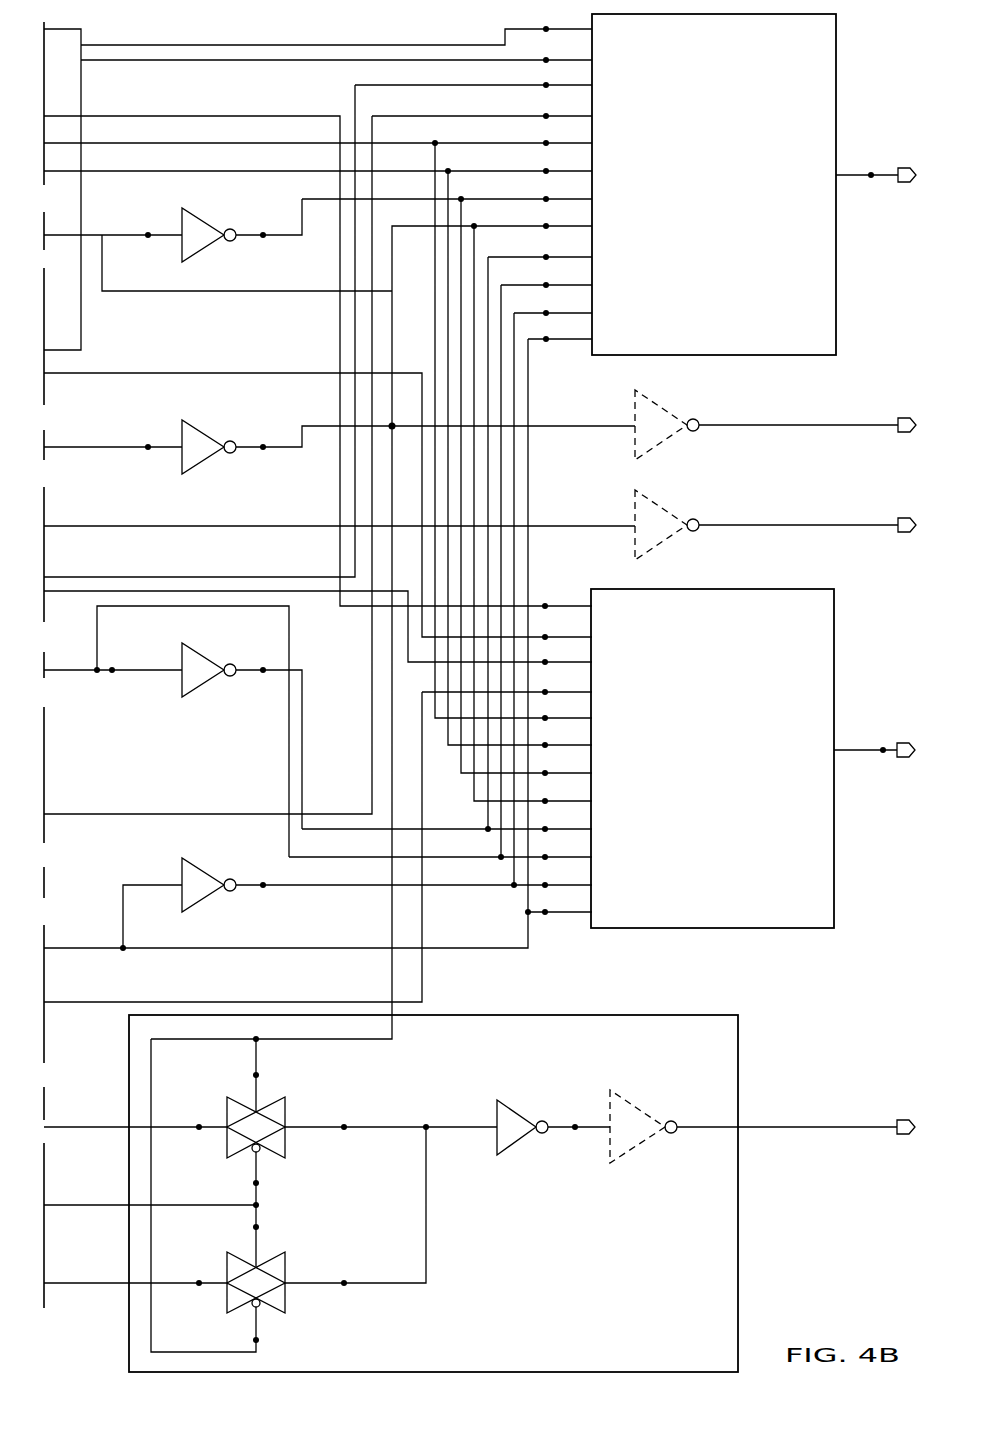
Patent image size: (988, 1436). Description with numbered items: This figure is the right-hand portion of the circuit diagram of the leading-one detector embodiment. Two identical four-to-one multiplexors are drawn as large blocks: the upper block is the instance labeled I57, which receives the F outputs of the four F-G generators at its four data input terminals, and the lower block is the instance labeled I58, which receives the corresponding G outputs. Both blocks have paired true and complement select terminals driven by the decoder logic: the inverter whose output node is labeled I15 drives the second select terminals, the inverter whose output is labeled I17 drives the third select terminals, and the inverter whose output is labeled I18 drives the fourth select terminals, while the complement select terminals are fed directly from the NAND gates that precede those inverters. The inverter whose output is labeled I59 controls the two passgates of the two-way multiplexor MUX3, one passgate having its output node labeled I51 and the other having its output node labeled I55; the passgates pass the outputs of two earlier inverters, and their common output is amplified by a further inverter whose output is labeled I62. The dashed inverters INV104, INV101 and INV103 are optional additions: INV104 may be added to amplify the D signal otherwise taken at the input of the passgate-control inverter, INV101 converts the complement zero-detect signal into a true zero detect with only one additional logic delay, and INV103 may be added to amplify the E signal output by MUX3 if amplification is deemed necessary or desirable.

The multiplexer MUX1 (c1smux4) I57 is at (735, 183).
The multiplexer MUX2 (c1smux4) I58 is at (732, 758).
The inverter INV8 I15 is at (212, 220).
The inverter INV7 I59 is at (212, 432).
The inverter INV9 I17 is at (211, 659).
The inverter INV10 I18 is at (211, 872).
The passgate PG1 I51 is at (274, 1127).
The passgate PG2 I55 is at (271, 1280).
The inverter INV11 I62 is at (505, 1118).
The inverter INV104 is at (663, 444).
The inverter INV101 is at (663, 544).
The inverter INV103 is at (640, 1146).
The 2-way multiplexor MUX3 is at (433, 1193).